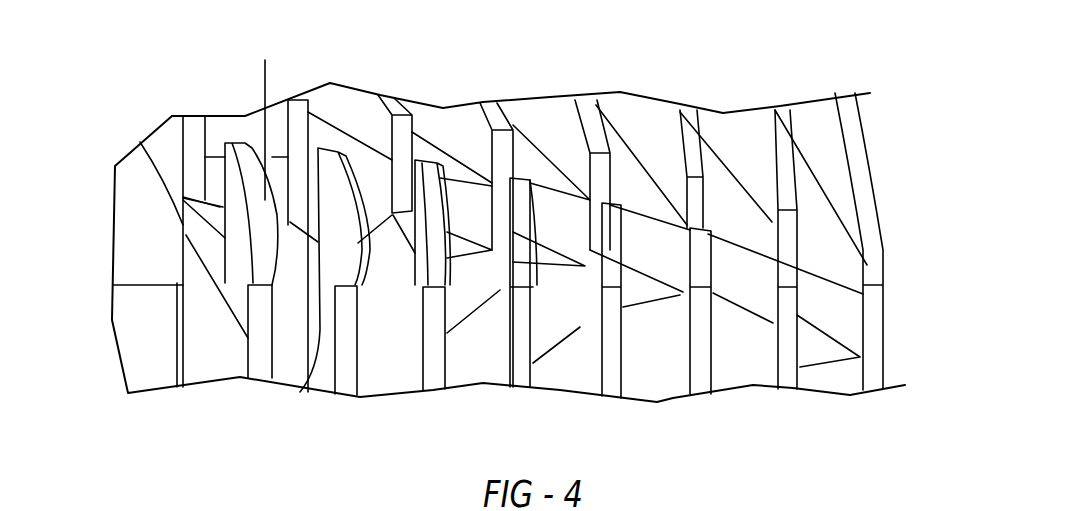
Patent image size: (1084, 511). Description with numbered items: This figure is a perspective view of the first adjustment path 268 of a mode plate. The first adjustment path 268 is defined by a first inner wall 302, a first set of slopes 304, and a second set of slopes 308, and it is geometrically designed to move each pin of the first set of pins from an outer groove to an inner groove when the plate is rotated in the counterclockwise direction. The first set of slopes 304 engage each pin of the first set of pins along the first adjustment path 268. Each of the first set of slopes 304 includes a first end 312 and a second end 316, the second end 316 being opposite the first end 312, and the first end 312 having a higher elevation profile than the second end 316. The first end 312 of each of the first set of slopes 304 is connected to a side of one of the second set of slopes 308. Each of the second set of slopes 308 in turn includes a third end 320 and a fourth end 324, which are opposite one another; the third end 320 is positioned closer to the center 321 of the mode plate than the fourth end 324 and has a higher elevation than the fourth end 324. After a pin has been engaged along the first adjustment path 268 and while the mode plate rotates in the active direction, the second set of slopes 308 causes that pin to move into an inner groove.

The first adjustment path 268 is at (123, 88).
The first inner wall 302 is at (852, 322).
The first set of slopes 304 is at (290, 257).
The second set of slopes 308 is at (216, 205).
The first end 312 is at (260, 265).
The second end 316 is at (283, 257).
The third end 320 is at (183, 227).
The center 321 is at (152, 195).
The fourth end 324 is at (279, 113).